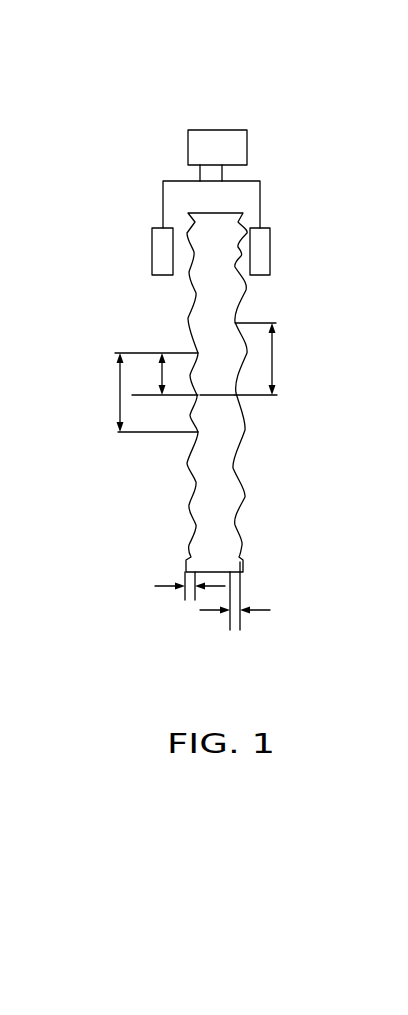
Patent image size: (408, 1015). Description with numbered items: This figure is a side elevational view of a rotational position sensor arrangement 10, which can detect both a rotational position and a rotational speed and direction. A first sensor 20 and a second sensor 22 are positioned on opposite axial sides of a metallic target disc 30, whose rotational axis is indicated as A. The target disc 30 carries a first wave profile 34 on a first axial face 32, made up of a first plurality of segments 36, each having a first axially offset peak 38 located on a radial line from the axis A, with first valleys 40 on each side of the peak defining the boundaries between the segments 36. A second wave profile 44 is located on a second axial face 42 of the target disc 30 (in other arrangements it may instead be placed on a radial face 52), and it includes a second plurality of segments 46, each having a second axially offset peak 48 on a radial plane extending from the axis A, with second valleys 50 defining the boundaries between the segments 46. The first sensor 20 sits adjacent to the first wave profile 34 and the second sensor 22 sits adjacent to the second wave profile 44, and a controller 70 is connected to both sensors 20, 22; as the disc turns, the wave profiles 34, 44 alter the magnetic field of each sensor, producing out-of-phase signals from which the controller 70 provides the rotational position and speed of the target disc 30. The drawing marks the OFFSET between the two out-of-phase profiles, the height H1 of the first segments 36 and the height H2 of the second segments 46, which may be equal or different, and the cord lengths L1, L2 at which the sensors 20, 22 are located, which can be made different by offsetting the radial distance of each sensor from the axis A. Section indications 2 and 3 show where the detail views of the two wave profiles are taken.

The rotational position sensor arrangement 10 is at (233, 85).
The first sensor 20 is at (258, 252).
The second sensor 22 is at (157, 246).
The target disc 30 is at (222, 510).
The first axial face 32 is at (268, 467).
The first wave profile 34 is at (244, 494).
The first plurality of segments 36 is at (246, 290).
The first axially offset peak 38 is at (244, 432).
The first valleys 40 is at (236, 266).
The second axial face 42 is at (145, 481).
The second wave profile 44 is at (189, 482).
The second plurality of segments 46 is at (190, 275).
The second axially offset peak 48 is at (170, 396).
The second valleys 50 is at (194, 293).
The radial face 52 is at (228, 200).
The controller 70 is at (237, 133).
The section line 2- 2 is at (365, 657).
The section line 3- 3 is at (35, 642).
The rotational axis A is at (274, 390).
The first cord length L1 is at (275, 364).
The second cord length L2 is at (118, 392).
The height of first plurality of segments H1 is at (249, 596).
The height of second plurality of segments H2 is at (176, 587).
The offset OFFSET is at (160, 375).